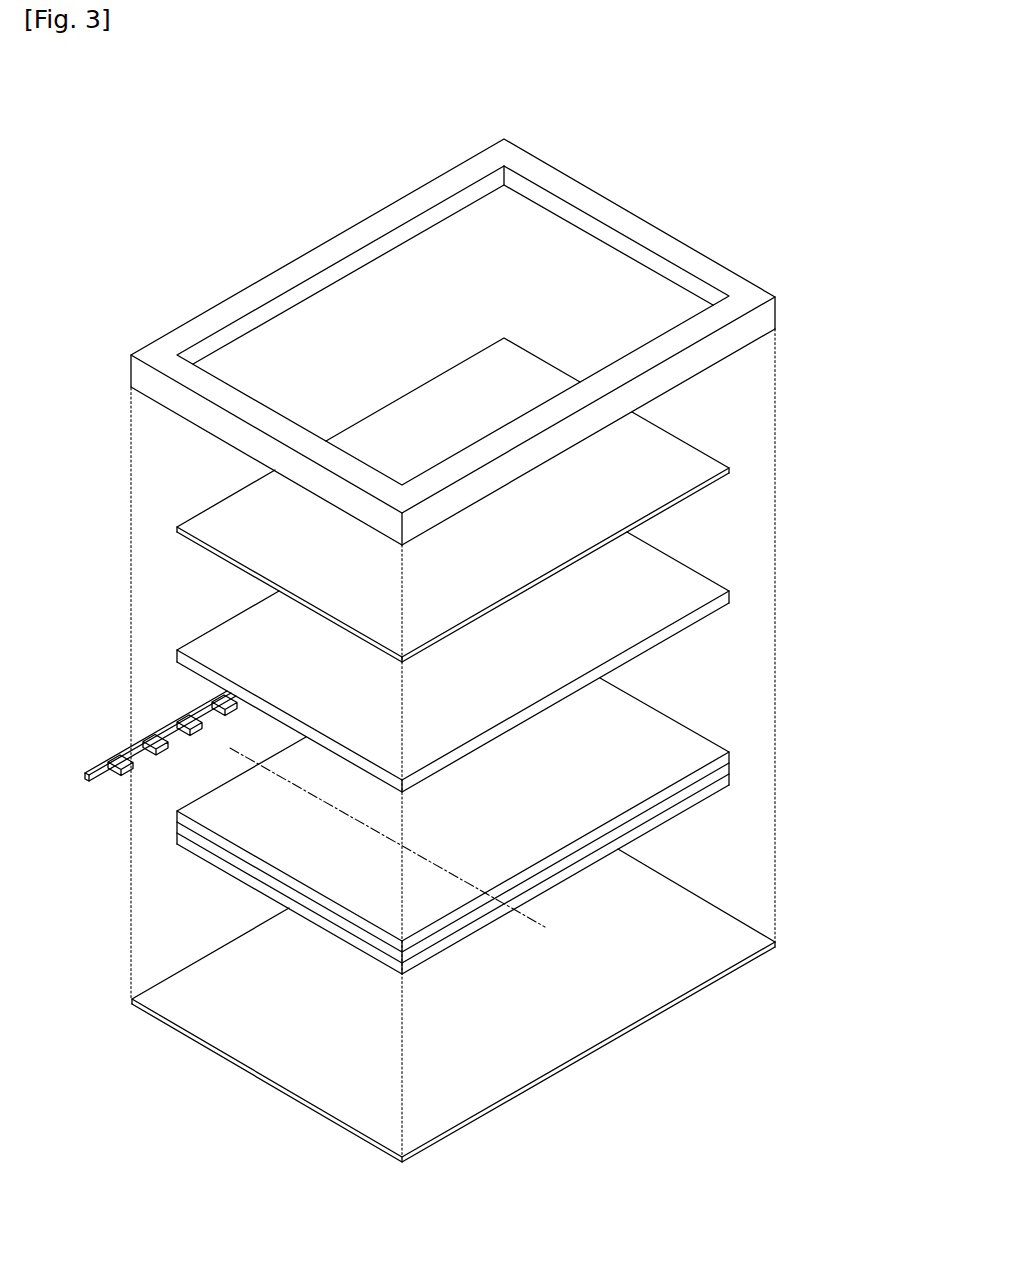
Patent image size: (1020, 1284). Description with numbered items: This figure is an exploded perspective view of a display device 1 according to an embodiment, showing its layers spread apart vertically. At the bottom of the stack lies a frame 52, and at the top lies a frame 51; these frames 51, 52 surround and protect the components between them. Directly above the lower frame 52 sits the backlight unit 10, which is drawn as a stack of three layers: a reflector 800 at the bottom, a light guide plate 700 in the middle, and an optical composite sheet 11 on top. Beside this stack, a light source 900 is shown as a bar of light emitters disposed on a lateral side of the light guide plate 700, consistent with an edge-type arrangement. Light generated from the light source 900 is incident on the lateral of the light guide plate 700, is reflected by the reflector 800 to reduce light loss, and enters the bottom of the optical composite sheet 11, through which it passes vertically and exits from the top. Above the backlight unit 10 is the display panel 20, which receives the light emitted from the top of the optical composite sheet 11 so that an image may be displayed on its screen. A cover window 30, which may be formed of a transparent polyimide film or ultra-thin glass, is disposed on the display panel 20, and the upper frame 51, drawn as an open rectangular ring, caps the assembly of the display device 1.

The display device 1 is at (413, 117).
The frame 51 is at (755, 317).
The cover window 30 is at (698, 462).
The display panel 20 is at (698, 587).
The backlight unit 10 is at (538, 826).
The optical composite sheet 11 is at (730, 757).
The light guide plate 700 is at (730, 767).
The reflector 800 is at (512, 871).
The frame 52 is at (705, 921).
The light source 900 is at (115, 760).